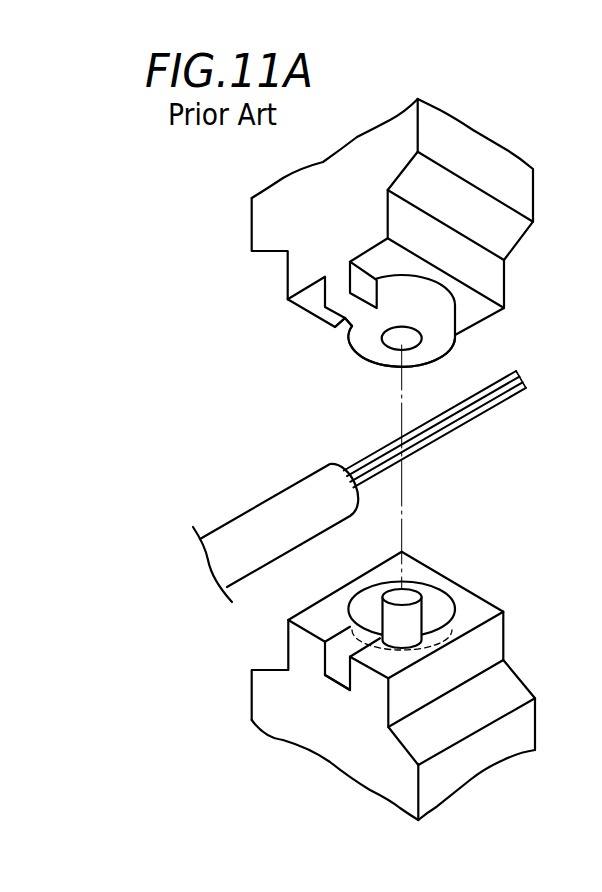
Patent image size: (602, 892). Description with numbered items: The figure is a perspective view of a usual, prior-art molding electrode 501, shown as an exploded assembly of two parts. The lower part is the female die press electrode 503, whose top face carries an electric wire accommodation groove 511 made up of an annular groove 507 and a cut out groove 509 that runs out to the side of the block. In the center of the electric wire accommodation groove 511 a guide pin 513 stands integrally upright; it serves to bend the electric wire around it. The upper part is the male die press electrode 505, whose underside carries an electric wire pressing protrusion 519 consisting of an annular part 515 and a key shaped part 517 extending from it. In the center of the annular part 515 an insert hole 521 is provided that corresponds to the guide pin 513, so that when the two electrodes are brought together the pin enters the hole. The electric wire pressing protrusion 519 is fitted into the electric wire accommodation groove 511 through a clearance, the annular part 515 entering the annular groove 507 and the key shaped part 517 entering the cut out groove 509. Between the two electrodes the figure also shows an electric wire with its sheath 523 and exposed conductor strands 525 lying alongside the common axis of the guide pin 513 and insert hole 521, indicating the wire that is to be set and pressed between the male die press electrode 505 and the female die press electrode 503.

The molding electrode 501 is at (184, 199).
The female die press electrode 503 is at (503, 632).
The male die press electrode 505 is at (503, 283).
The annular groove 507 is at (372, 633).
The cut out groove 509 is at (345, 673).
The electric wire accommodation groove 511 is at (170, 637).
The guide pin 513 is at (407, 612).
The annular part 515 is at (365, 347).
The key shaped part 517 is at (345, 309).
The electric wire pressing protrusion 519 is at (212, 328).
The insert hole 521 is at (395, 347).
The cable sheath 523 is at (253, 513).
The wires 525 is at (460, 430).